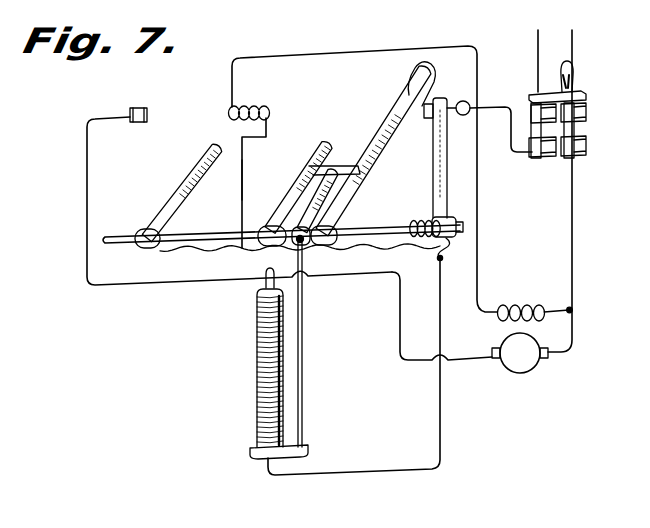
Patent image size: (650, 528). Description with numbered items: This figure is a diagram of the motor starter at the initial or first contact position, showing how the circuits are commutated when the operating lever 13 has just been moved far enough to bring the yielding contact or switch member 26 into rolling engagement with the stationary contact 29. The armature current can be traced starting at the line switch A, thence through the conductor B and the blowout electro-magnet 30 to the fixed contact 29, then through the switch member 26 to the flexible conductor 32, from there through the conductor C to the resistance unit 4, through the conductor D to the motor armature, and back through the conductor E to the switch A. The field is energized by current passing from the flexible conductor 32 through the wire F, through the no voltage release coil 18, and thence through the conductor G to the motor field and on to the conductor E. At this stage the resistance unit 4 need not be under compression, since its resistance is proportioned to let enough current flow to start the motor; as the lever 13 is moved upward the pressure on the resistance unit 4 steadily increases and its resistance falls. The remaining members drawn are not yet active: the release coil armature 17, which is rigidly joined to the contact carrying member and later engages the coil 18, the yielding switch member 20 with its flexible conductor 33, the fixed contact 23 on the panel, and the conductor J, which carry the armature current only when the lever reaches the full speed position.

The resistance unit 4 is at (256, 367).
The operating lever 13 is at (414, 73).
The release coil armature 17 is at (328, 148).
The no voltage release coil 18 is at (253, 103).
The yielding contact or switch member 20 is at (190, 173).
The fixed contact 23 is at (148, 115).
The yielding contact or switch member 26 is at (450, 165).
The stationary contact 29 is at (428, 120).
The electro-magnet 30 is at (459, 97).
The flexible conductor 32 is at (453, 254).
The flexible conductor 33 is at (212, 252).
The line switch A is at (567, 94).
The conductor B is at (504, 108).
The conductor C is at (442, 333).
The conductor D is at (372, 270).
The conductor E is at (573, 244).
The wire F is at (243, 175).
The conductor G is at (348, 56).
The conductor J is at (87, 203).